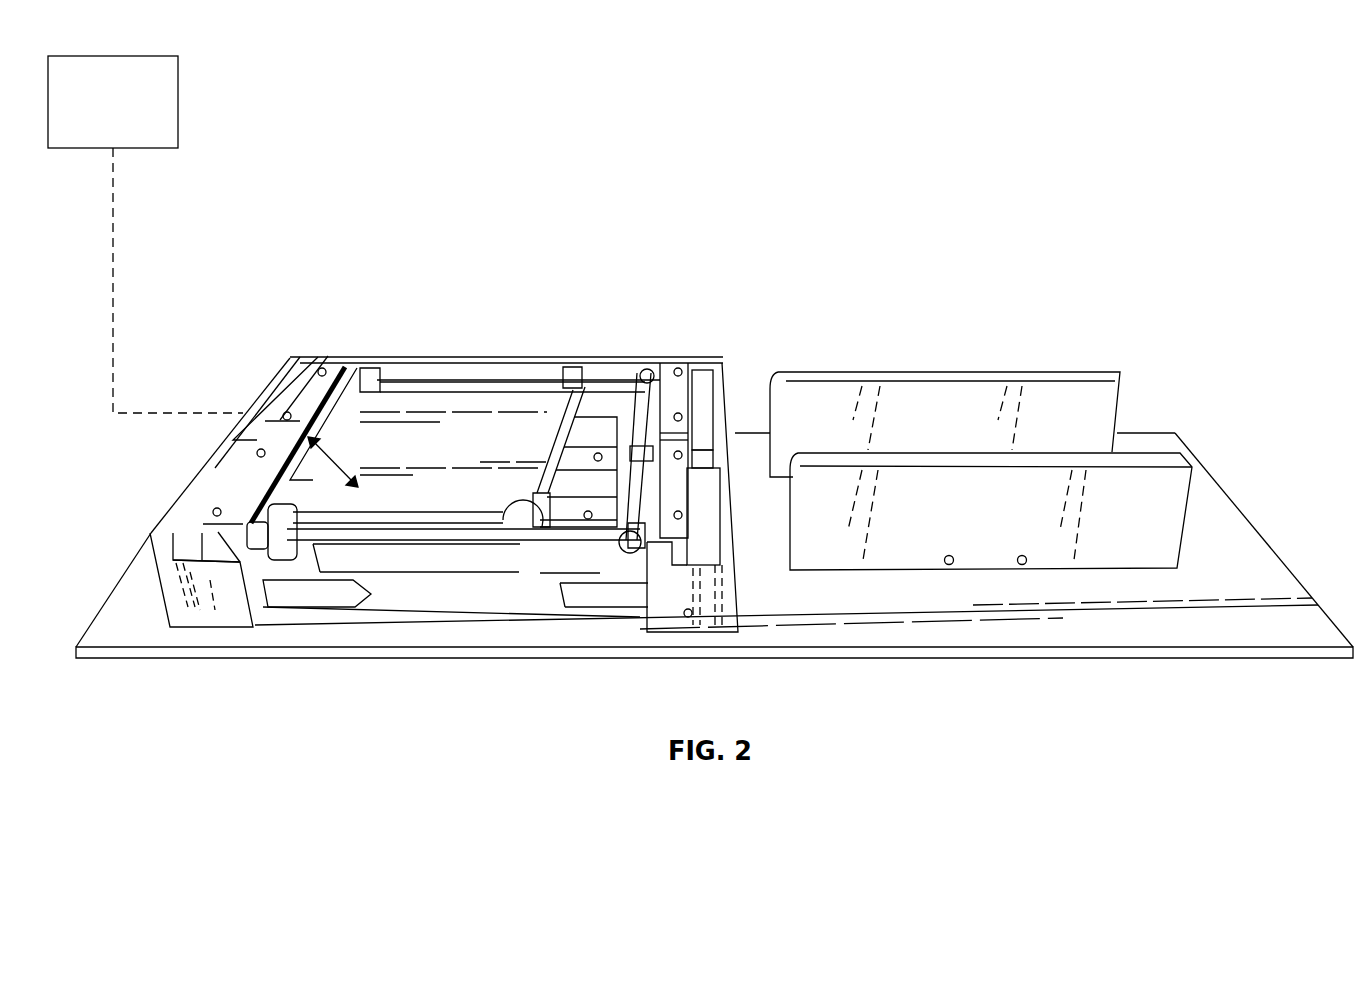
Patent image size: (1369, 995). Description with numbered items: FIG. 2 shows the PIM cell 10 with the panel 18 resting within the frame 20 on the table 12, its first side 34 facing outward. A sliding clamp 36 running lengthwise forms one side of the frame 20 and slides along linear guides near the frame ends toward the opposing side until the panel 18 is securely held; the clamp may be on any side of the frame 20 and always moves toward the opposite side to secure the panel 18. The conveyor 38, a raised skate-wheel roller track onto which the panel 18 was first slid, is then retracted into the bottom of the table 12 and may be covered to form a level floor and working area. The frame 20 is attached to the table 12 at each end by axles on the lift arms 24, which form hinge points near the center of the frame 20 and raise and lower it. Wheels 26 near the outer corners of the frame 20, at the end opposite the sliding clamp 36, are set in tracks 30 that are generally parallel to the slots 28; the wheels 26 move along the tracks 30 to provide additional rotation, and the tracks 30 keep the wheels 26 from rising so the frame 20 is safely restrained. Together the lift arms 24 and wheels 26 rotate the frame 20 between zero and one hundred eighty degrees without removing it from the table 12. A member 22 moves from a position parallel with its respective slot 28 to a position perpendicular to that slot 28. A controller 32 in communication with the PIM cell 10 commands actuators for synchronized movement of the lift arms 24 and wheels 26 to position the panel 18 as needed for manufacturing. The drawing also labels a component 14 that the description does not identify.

The PIM cell 10 is at (715, 333).
The table 12 is at (506, 717).
The fixture block 14 is at (1078, 580).
The panel 18 is at (455, 405).
The frame 20 is at (565, 385).
The end support block 22 is at (176, 603).
The lift arms 24 is at (300, 395).
The wheels 26 is at (336, 372).
The slot 28 is at (190, 533).
The track 30 is at (221, 543).
The controller 32 is at (130, 115).
The first side 34 is at (302, 438).
The sliding clamp 36 is at (553, 447).
The conveyor 38 is at (400, 560).